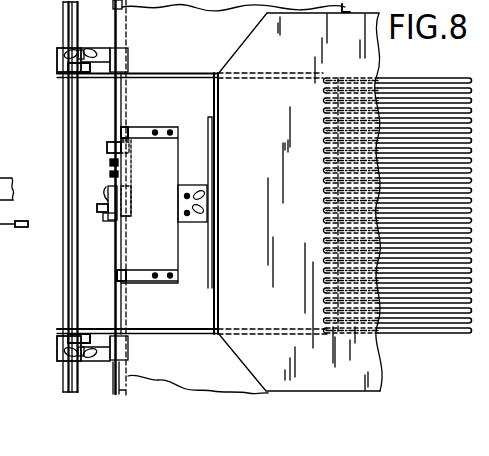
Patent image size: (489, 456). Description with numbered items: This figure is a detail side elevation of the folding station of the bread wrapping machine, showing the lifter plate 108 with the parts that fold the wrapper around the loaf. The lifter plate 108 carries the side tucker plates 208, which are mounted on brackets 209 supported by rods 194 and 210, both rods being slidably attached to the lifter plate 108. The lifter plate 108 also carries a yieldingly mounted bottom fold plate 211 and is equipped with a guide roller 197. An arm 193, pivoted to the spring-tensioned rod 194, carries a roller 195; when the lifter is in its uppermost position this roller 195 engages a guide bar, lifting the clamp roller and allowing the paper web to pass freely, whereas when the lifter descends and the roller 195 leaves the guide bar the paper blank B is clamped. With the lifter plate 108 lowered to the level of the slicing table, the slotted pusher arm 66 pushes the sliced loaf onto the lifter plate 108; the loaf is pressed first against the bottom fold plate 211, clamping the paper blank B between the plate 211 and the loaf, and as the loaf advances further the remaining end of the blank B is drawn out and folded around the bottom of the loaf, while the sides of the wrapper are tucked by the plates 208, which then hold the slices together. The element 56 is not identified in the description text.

The cutting unit 56 is at (14, 187).
The slotted pusher arm 66 is at (450, 322).
The lifter plate 108 is at (132, 110).
The arm 193 is at (108, 200).
The rod 194 is at (113, 27).
The roller 195 is at (108, 219).
The guide roller 197 is at (345, 7).
The side tucker plates 208 is at (181, 68).
The brackets 209 is at (68, 73).
The rod 210 is at (68, 265).
The bottom fold plate 211 is at (210, 287).
The paper blank B is at (378, 62).